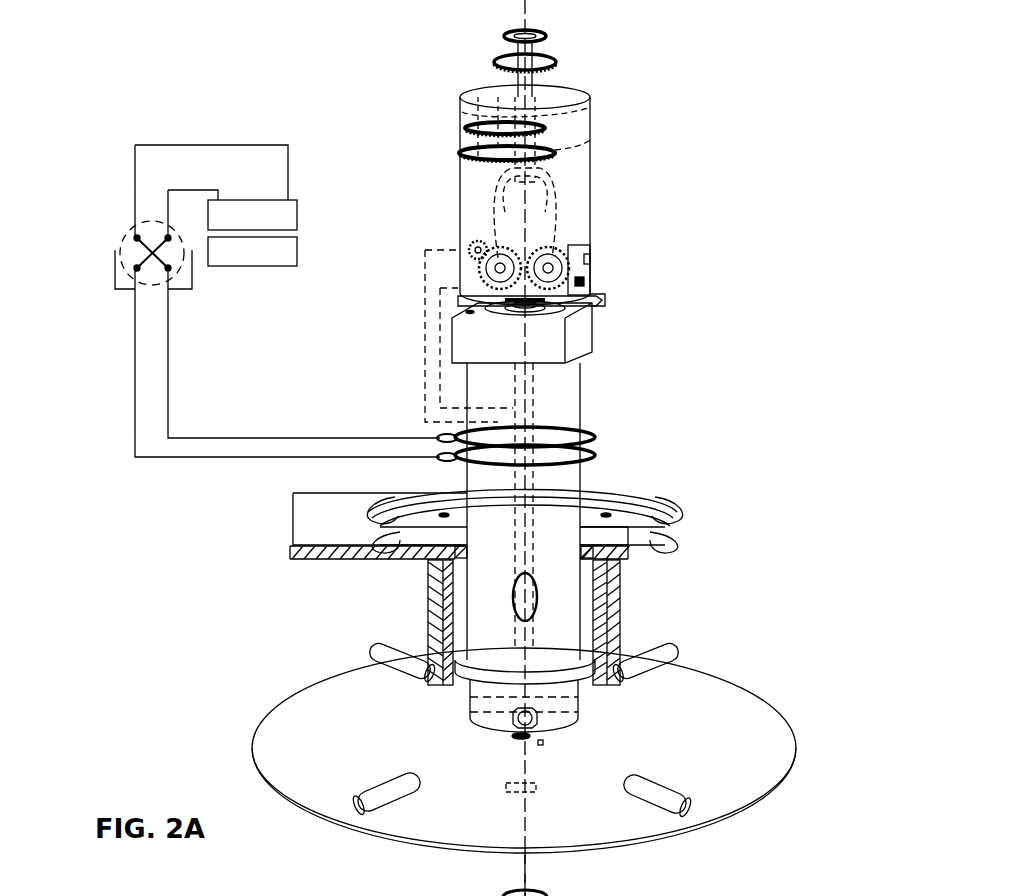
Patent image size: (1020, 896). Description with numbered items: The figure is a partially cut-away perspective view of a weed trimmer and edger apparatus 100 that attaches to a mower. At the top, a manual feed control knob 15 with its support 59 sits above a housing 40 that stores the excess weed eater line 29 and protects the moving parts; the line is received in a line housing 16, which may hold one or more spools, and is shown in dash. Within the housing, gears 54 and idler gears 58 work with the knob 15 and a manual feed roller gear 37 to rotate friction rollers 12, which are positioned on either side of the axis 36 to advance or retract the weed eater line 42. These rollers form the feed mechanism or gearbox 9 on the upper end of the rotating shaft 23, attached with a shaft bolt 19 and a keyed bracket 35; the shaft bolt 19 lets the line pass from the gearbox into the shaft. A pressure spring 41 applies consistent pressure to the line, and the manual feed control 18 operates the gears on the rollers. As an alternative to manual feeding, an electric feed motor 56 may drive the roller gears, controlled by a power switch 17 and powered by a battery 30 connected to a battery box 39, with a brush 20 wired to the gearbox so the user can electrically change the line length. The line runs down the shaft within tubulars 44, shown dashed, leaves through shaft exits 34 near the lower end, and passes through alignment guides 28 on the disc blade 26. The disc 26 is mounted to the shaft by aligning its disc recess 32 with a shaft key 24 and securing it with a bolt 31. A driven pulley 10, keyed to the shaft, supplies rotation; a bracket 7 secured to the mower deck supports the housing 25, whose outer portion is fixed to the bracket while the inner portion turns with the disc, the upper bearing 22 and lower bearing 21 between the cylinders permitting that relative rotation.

The weed trimmer and edger apparatus 100 is at (190, 48).
The manual feed control knob 15 is at (502, 36).
The support 59 is at (558, 50).
The housing 40 is at (578, 93).
The weed eater line 29 is at (588, 106).
The idler gears 58 is at (462, 118).
The gears 54 is at (590, 139).
The line housing 16 is at (553, 180).
The weed eater line 42 is at (552, 212).
The manual feed roller gear 37 is at (470, 248).
The gearbox 9 is at (582, 246).
The pressure spring 41 is at (590, 258).
The keyed bracket 35 is at (586, 280).
The manual feed control 18 is at (600, 296).
The friction rollers 12 is at (448, 312).
The shaft bolt 19 is at (525, 308).
The electric feed motor 56 is at (425, 258).
The rotating shaft 23 is at (567, 487).
The brush 20 is at (592, 445).
The battery box 39 is at (255, 200).
The battery 30 is at (252, 267).
The power switch 17 is at (122, 245).
The driven pulley 10 is at (668, 502).
The bracket 7 is at (410, 566).
The upper bearing 22 is at (620, 565).
The housing 25 is at (622, 600).
The lower bearing 21 is at (598, 685).
The tubulars 44 is at (432, 672).
The disc blade 26 is at (612, 820).
The alignment guides 28 is at (385, 786).
The shaft exits 34 is at (536, 722).
The shaft key 24 is at (511, 737).
The disc recess 32 is at (543, 744).
The bolt 31 is at (506, 792).
The axis 36 is at (522, 868).